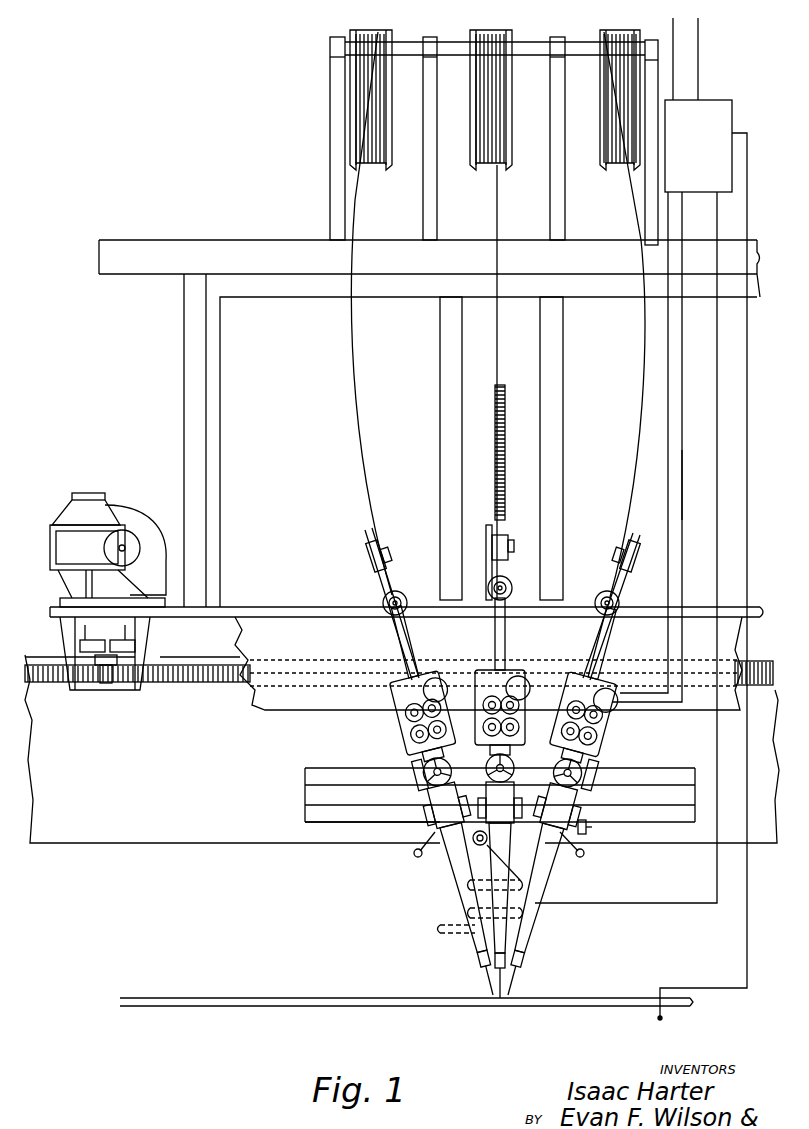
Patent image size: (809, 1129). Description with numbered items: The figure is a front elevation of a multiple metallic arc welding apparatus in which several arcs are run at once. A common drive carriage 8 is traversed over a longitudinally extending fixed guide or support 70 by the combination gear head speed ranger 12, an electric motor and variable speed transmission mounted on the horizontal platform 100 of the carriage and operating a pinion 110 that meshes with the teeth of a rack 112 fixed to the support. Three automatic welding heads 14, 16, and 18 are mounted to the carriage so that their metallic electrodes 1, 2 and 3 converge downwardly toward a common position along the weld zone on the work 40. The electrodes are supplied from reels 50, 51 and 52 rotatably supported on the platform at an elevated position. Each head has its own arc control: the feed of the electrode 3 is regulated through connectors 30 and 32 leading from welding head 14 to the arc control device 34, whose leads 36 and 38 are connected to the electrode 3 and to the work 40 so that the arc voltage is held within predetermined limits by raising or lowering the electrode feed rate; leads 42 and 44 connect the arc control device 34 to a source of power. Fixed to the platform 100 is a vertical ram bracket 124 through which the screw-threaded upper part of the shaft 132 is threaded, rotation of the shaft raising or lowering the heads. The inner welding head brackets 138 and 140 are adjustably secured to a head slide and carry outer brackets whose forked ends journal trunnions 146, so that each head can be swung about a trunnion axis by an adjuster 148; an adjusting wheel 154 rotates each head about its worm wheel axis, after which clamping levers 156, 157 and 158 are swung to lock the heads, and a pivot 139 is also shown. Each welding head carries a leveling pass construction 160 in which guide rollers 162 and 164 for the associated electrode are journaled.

The metallic electrode 1 is at (485, 970).
The metallic electrode 2 is at (508, 990).
The metallic electrode 3 is at (518, 968).
The drive carriage 8 is at (190, 617).
The combination gear head speed ranger 12 is at (90, 495).
The automatic welding head 14 is at (605, 738).
The automatic welding head 16 is at (528, 724).
The automatic welding head 18 is at (405, 738).
The connector 30 is at (660, 515).
The connector 32 is at (684, 520).
The arc control device 34 is at (706, 180).
The lead 36 is at (717, 214).
The lead 38 is at (747, 213).
The work 40 is at (606, 995).
The lead 42 is at (672, 22).
The lead 44 is at (699, 26).
The electrode reel 50 is at (388, 106).
The electrode reel 51 is at (510, 112).
The electrode reel 52 is at (600, 120).
The frame 70 is at (165, 843).
The horizontal platform 100 is at (270, 608).
The pinion 110 is at (105, 690).
The rack 112 is at (170, 690).
The vertical ram bracket 124 is at (515, 600).
The shaft 132 is at (506, 432).
The inner welding head bracket 138 is at (418, 768).
The pivot 139 is at (540, 850).
The inner welding head bracket 140 is at (590, 800).
The trunnion 146 is at (395, 800).
The adjuster 148 is at (597, 772).
The adjusting wheel 154 is at (592, 828).
The clamping lever 156 is at (584, 858).
The adjusting screw 157 is at (525, 862).
The clamping lever 158 is at (412, 858).
The leveling pass construction 160 is at (388, 632).
The guide roller 162 is at (380, 540).
The guide roller 164 is at (402, 590).